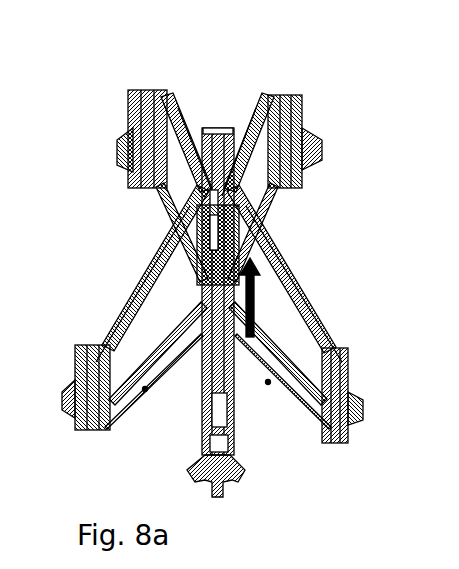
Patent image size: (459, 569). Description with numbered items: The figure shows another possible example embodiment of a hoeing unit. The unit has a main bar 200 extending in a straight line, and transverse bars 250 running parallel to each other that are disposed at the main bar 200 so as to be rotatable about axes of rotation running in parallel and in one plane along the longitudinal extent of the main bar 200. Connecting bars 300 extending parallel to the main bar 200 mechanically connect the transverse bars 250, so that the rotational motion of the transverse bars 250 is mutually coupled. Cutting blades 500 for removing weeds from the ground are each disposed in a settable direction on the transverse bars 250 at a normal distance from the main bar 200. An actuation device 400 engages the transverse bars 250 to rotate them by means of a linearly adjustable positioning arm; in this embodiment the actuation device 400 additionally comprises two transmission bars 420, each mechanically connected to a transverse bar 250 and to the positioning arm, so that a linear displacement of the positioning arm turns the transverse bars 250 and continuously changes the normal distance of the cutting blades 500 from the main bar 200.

The main bar 200 is at (218, 132).
The transverse bar 250 is at (183, 140).
The connecting bar 300 is at (147, 97).
The actuation device 400 is at (178, 248).
The transmission bar 420 is at (145, 390).
The cutting blade 500 is at (118, 148).